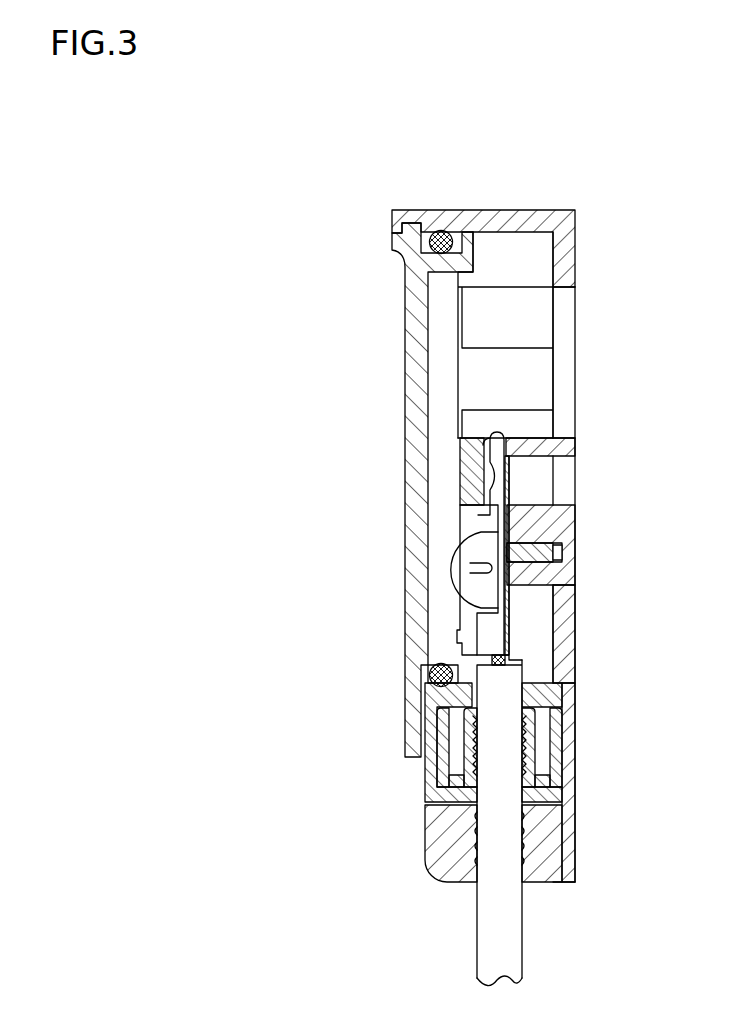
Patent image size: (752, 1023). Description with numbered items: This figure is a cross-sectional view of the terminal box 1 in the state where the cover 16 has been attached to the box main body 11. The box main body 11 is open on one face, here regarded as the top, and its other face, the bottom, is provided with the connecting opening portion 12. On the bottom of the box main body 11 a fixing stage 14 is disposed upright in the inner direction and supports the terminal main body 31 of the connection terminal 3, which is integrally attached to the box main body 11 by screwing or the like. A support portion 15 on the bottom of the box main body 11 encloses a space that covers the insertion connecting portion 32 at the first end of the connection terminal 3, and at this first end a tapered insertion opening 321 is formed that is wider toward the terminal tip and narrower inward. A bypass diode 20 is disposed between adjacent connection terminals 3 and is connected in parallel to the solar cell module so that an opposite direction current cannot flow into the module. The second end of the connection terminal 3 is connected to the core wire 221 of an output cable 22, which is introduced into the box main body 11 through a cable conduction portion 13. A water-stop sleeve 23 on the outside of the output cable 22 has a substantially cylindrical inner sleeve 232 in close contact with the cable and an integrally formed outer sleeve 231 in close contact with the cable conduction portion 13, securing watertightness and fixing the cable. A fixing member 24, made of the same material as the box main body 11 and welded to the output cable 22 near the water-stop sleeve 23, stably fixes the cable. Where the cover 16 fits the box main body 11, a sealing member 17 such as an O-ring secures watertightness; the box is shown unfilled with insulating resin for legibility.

The terminal box 1 is at (376, 273).
The connection terminal 3 is at (448, 590).
The box main body 11 is at (524, 216).
The connecting opening portion 12 is at (566, 290).
The cable conduction portion 13 is at (536, 885).
The fixing stage 14 is at (548, 525).
The support portion 15 is at (470, 488).
The cover 16 is at (414, 416).
The sealing member 17 is at (438, 228).
The bypass diode 20 is at (460, 571).
The output cable 22 is at (512, 955).
The water-stop sleeve 23 is at (440, 793).
The fixing member 24 is at (435, 860).
The terminal main body 31 is at (510, 598).
The insertion connecting portion 32 is at (486, 466).
The core wire 221 is at (500, 660).
The outer sleeve 231 is at (445, 728).
The inner sleeve 232 is at (455, 778).
The tapered insertion opening 321 is at (500, 430).